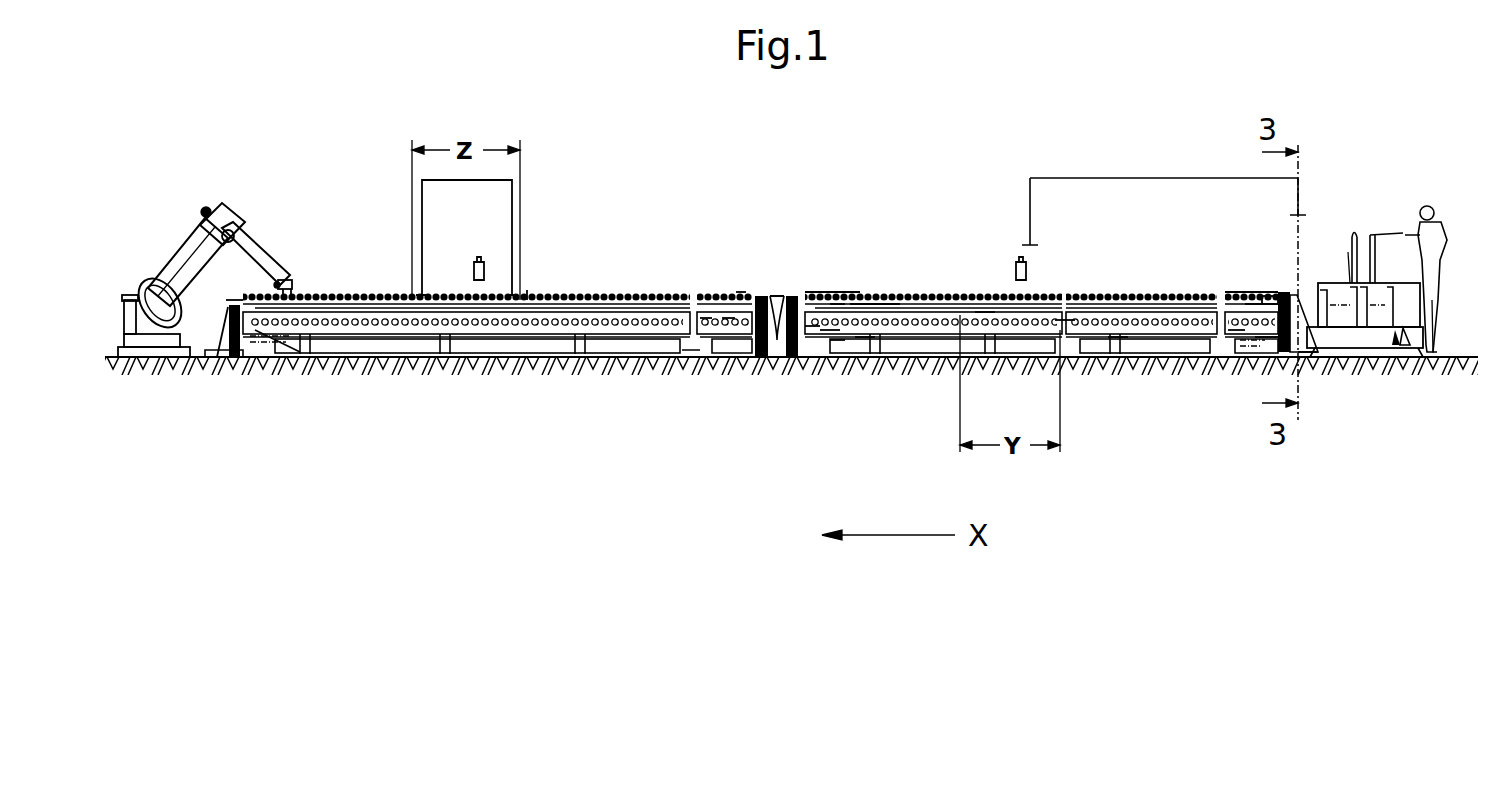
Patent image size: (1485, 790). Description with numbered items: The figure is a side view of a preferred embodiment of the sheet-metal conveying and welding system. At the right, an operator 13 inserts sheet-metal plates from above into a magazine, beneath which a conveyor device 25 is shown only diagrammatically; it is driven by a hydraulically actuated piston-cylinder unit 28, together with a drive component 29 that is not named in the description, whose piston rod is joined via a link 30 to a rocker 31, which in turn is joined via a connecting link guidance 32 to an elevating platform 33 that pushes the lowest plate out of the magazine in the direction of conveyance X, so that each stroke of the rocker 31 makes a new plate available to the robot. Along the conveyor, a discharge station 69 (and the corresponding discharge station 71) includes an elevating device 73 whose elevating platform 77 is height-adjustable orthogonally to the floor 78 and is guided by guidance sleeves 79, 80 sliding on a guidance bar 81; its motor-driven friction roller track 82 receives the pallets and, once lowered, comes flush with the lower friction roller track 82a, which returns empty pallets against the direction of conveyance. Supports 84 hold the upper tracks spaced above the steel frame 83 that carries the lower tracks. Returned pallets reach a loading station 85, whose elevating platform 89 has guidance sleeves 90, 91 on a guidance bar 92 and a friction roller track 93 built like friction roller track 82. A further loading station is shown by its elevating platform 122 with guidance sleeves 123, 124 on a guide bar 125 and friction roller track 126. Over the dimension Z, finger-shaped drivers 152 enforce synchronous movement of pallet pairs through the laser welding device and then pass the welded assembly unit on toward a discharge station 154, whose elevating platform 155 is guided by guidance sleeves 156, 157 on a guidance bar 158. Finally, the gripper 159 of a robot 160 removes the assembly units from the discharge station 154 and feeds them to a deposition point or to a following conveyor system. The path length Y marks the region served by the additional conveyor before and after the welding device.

The operator 13 is at (1432, 250).
The conveyor device 25 is at (1442, 362).
The piston-cylinder unit 28 is at (1340, 335).
The filling machine body 29 is at (1365, 335).
The link 30 is at (1396, 348).
The rocker 31 is at (1403, 348).
The connecting link guidance 32 is at (1362, 300).
The elevating platform 33 is at (1380, 300).
The discharge station 69 is at (827, 292).
The discharge station 71 is at (790, 296).
The elevating device 73 is at (860, 300).
The elevating platform 77 is at (862, 337).
The floor 78 is at (828, 332).
The guidance sleeve 79 is at (792, 300).
The guidance sleeve 80 is at (810, 328).
The guidance bar 81 is at (790, 325).
The friction roller track 82 is at (838, 300).
The lower friction roller track 82a is at (1062, 322).
The steel frame 83 is at (1118, 338).
The support 84 is at (986, 316).
The loading station 85 is at (1230, 292).
The elevating platform 89 is at (1273, 298).
The guidance sleeve 90 is at (1292, 296).
The guidance sleeve 91 is at (1262, 338).
The guidance bar 92 is at (1305, 355).
The friction roller track 93 is at (1253, 296).
The elevating platform 122 is at (712, 318).
The guidance sleeve 123 is at (758, 300).
The guidance sleeve 124 is at (742, 293).
The guide bar 125 is at (761, 332).
The friction roller track 126 is at (728, 318).
The finger-shaped driver 152 is at (528, 295).
The discharge station 154 is at (245, 233).
The elevating platform 155 is at (290, 322).
The guidance sleeve 156 is at (232, 283).
The guidance sleeve 157 is at (208, 360).
The guidance bar 158 is at (235, 357).
The gripper 159 is at (293, 287).
The robot 160 is at (189, 252).